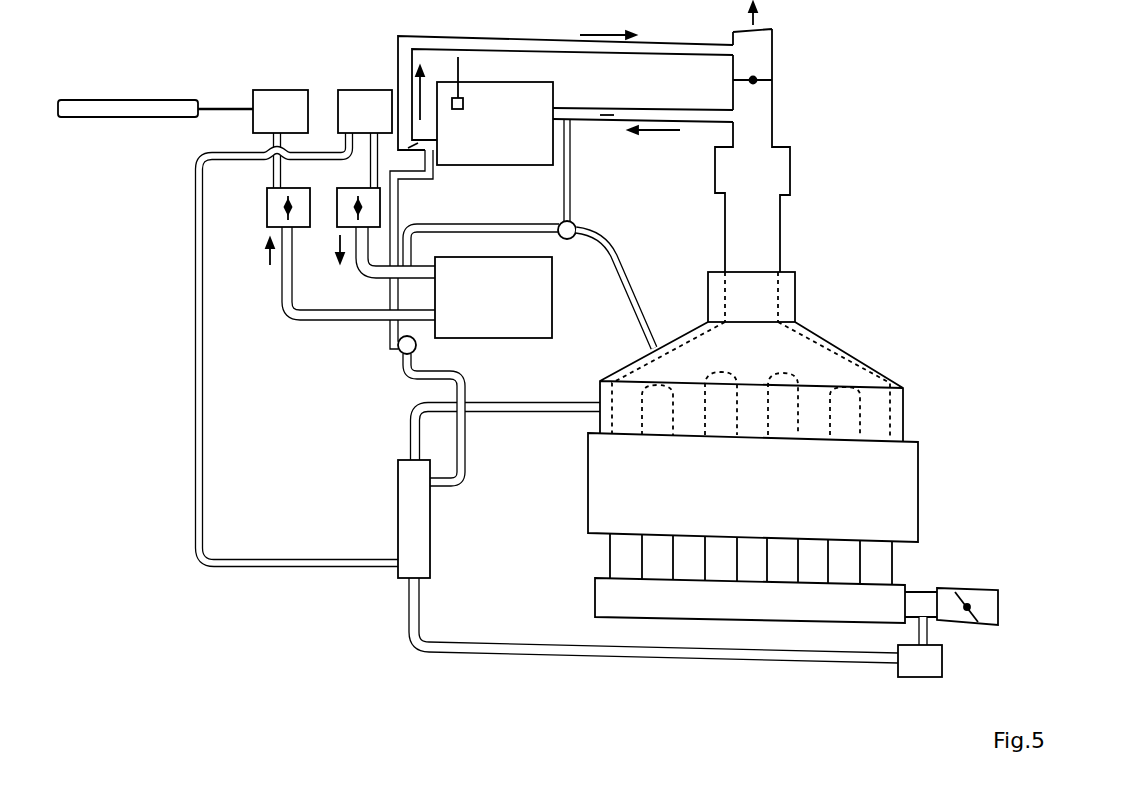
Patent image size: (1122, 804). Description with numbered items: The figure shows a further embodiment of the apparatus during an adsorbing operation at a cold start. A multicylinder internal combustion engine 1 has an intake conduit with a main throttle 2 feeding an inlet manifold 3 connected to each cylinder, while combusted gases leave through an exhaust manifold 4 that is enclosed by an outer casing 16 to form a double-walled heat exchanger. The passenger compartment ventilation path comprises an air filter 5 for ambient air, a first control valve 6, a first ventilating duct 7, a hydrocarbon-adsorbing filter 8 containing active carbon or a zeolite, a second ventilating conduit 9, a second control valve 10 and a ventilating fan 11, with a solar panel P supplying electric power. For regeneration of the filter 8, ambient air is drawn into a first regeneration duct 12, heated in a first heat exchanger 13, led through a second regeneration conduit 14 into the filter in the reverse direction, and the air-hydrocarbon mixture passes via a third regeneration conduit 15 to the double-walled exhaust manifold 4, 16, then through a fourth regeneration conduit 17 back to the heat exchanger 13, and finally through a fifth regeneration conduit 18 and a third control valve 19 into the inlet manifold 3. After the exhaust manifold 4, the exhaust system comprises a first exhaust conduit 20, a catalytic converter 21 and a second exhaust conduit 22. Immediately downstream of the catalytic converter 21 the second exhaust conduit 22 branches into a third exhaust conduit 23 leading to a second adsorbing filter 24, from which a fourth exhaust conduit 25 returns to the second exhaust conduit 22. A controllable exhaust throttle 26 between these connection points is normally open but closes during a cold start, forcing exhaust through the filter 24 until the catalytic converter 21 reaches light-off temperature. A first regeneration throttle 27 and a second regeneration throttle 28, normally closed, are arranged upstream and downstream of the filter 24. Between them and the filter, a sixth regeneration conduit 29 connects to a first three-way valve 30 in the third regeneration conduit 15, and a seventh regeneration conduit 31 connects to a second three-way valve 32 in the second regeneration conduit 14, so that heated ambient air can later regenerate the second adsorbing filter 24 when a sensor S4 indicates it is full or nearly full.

The multicylinder internal combustion engine 1 is at (853, 515).
The main throttle 2 is at (985, 590).
The inlet manifold 3 is at (720, 622).
The exhaust manifold 4 is at (847, 360).
The air filter 5 is at (378, 92).
The first control valve 6 is at (345, 200).
The first ventilating duct 7 is at (355, 262).
The hydrocarbon-adsorbing filter 8 is at (515, 338).
The second ventilating conduit 9 is at (292, 318).
The second control valve 10 is at (268, 212).
The ventilating fan 11 is at (277, 298).
The first regeneration duct 12 is at (195, 460).
The first heat exchanger 13 is at (398, 512).
The second regeneration conduit 14 is at (460, 482).
The third regeneration conduit 15 is at (590, 232).
The outer casing 16 is at (752, 348).
The fourth regeneration conduit 17 is at (535, 412).
The fifth regeneration conduit 18 is at (517, 643).
The third control valve 19 is at (942, 665).
The first exhaust conduit 20 is at (735, 237).
The catalytic converter 21 is at (778, 165).
The second exhaust conduit 22 is at (735, 32).
The third exhaust conduit 23 is at (690, 118).
The second adsorbing filter 24 is at (495, 130).
The fourth exhaust conduit 25 is at (533, 45).
The exhaust throttle 26 is at (757, 84).
The first regeneration throttle 27 is at (607, 113).
The second regeneration throttle 28 is at (418, 152).
The sixth regeneration conduit 29 is at (571, 140).
The first three-way valve 30 is at (571, 240).
The seventh regeneration conduit 31 is at (394, 197).
The second three-way valve 32 is at (400, 353).
The solar panel P is at (125, 118).
The sensor S4 is at (463, 100).